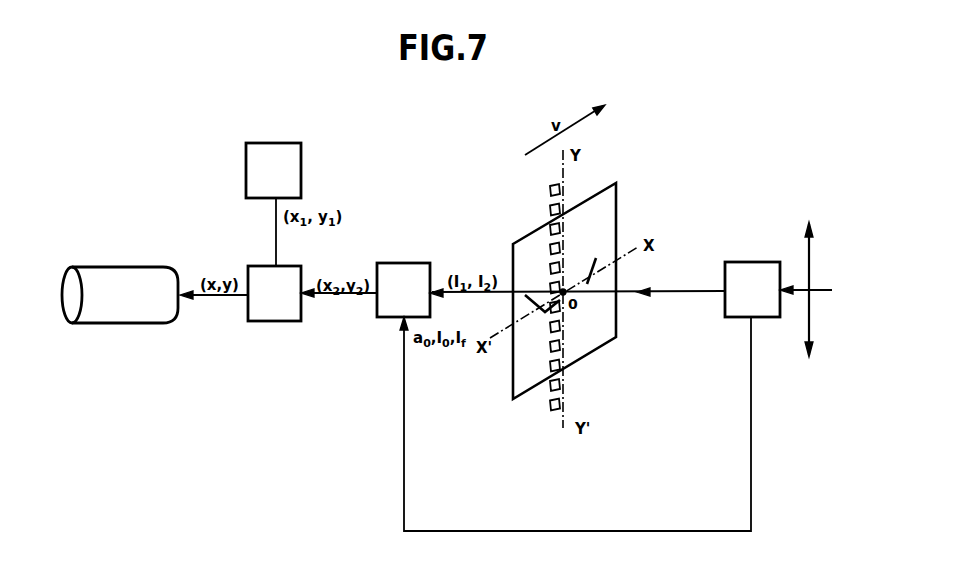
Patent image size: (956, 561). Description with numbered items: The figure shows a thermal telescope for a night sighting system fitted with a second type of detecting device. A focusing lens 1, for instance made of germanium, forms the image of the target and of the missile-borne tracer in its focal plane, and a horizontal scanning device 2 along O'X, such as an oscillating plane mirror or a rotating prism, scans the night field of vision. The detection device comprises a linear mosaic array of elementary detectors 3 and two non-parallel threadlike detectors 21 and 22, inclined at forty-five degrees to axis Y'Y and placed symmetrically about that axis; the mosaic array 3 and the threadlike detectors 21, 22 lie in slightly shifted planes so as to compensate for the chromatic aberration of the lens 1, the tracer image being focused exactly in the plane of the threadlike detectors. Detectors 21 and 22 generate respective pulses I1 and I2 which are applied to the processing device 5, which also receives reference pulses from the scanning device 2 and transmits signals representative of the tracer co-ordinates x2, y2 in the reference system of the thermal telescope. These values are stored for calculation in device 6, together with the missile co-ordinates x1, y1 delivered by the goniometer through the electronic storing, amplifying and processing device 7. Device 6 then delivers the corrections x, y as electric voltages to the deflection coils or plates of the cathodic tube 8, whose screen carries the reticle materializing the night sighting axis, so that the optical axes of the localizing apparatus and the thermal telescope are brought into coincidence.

The lens 1 is at (812, 268).
The scanning device 2 is at (732, 313).
The linear mosaic array of elementary detectors 3 is at (550, 212).
The processing device 5 is at (386, 318).
The calculating device 6 is at (270, 321).
The electronic storing, amplifying and processing device 7 is at (257, 165).
The cathodic tube 8 is at (117, 313).
The threadlike detector 21 is at (600, 283).
The threadlike detector 22 is at (523, 298).